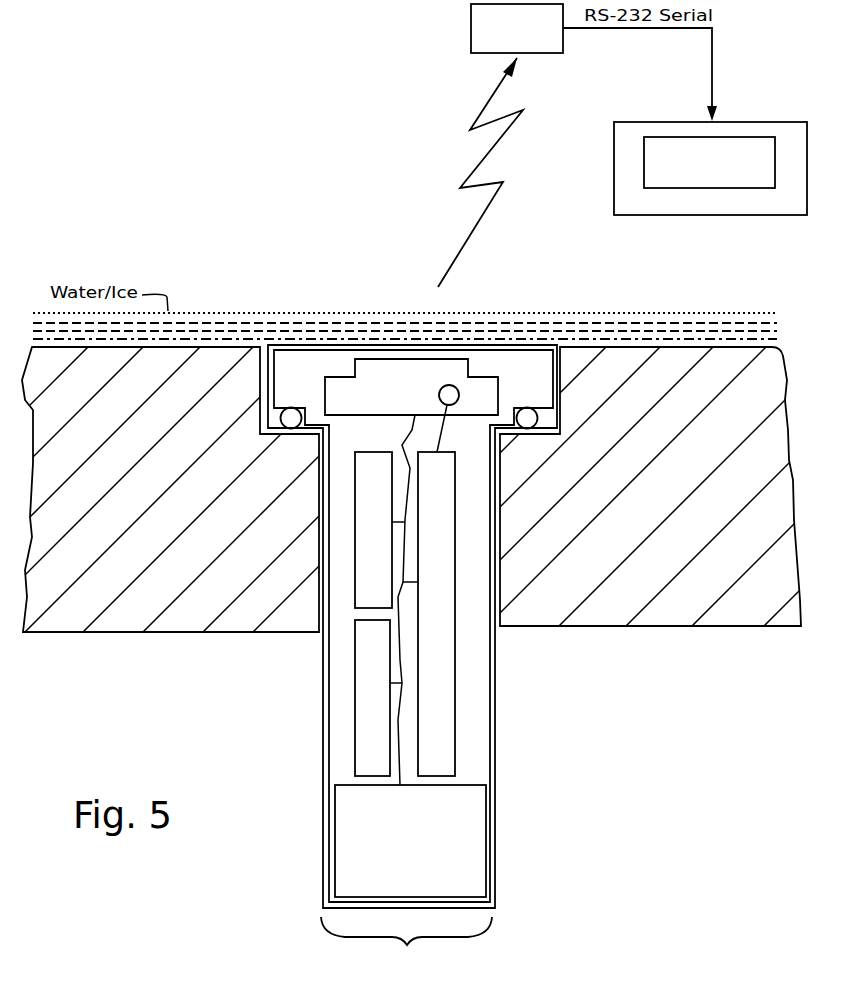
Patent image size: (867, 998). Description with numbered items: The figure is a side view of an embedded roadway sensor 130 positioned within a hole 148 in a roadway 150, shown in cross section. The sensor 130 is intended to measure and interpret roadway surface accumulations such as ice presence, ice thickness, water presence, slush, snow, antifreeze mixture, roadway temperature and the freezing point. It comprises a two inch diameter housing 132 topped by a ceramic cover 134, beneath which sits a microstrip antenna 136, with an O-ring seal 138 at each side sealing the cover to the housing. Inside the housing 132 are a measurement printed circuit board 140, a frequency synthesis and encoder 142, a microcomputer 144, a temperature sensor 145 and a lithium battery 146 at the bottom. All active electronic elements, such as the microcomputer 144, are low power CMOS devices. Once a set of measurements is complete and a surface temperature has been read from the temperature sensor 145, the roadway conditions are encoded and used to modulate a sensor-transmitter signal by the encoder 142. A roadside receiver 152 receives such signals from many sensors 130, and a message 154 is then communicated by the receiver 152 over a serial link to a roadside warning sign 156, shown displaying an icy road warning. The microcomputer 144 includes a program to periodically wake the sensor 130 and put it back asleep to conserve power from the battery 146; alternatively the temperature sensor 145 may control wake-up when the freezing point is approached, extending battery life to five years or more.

The roadway sensor 130 is at (338, 338).
The housing 132 is at (492, 750).
The ceramic cover 134 is at (528, 352).
The microstrip antenna 136 is at (397, 360).
The O-ring seal 138 is at (282, 408).
The measurement printed circuit board 140 is at (363, 588).
The frequency synthesis and encoder 142 is at (356, 723).
The microcomputer 144 is at (443, 667).
The temperature sensor 145 is at (440, 388).
The lithium battery 146 is at (401, 835).
The hole 148 is at (406, 943).
The roadway 150 is at (123, 615).
The roadside receiver 152 is at (530, 41).
The message 154 is at (757, 136).
The roadside warning sign 156 is at (740, 215).